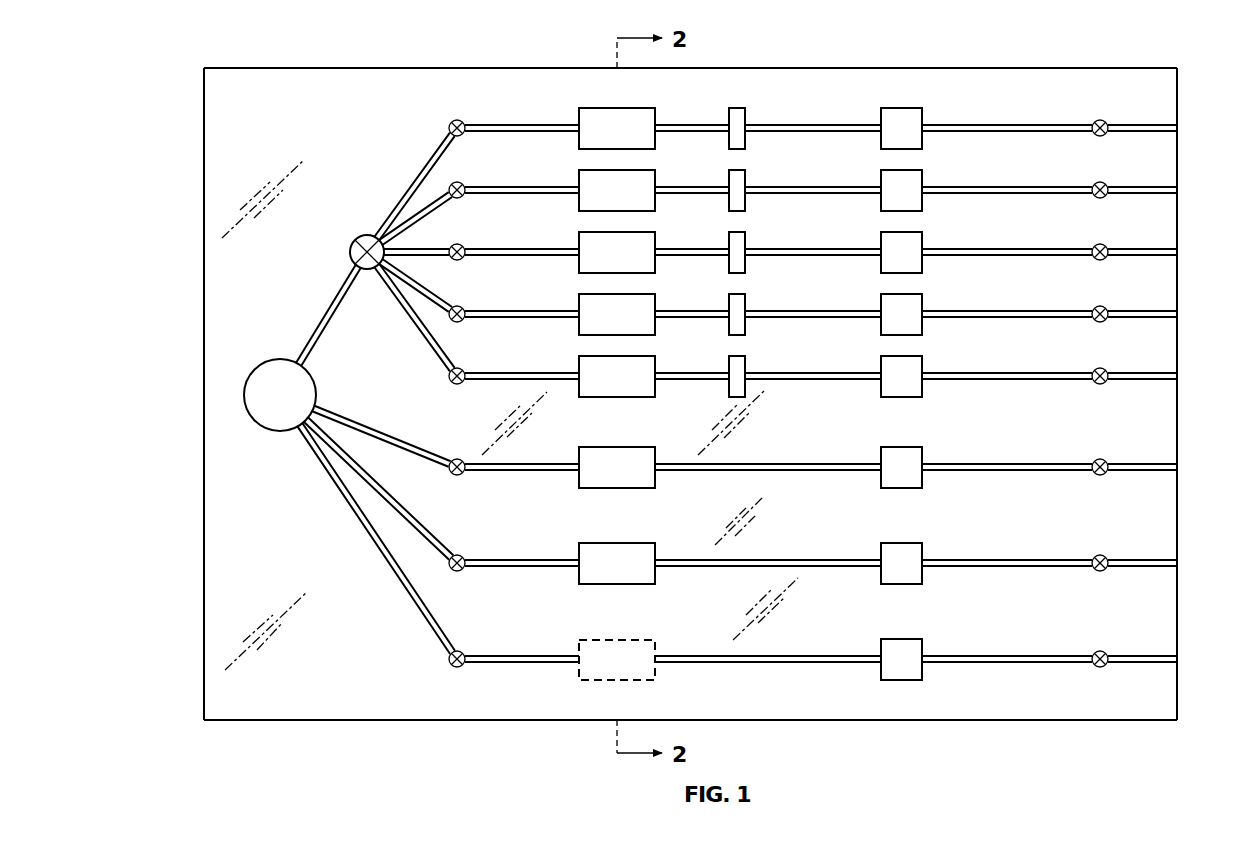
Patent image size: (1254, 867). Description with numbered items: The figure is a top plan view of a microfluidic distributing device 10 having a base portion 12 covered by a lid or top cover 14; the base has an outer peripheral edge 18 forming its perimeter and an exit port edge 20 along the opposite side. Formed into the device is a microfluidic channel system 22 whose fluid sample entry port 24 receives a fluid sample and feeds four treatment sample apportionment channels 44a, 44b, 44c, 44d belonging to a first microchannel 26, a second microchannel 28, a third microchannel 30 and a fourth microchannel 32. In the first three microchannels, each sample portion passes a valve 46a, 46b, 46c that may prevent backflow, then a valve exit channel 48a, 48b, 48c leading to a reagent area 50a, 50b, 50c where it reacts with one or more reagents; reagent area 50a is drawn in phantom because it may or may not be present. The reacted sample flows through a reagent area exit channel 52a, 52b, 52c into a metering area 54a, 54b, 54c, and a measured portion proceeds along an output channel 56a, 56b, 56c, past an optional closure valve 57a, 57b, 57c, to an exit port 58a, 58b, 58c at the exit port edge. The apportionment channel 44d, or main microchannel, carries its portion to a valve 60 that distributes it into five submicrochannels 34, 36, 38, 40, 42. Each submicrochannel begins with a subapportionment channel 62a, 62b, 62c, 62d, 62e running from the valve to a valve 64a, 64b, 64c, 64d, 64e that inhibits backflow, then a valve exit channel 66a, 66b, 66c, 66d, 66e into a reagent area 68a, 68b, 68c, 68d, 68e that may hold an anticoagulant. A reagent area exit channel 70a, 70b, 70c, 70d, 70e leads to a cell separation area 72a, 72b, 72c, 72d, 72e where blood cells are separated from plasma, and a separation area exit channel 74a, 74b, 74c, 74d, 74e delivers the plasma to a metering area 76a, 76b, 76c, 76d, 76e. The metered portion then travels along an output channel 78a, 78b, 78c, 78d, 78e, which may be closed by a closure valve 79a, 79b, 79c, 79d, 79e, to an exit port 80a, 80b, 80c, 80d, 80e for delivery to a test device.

The microfluidic distributing device 10 is at (183, 48).
The base portion 12 is at (248, 68).
The lid or top cover 14 is at (355, 88).
The outer peripheral edge 18 is at (204, 238).
The exit port edge 20 is at (1178, 95).
The microfluidic channel system 22 is at (330, 145).
The fluid sample entry port 24 is at (283, 358).
The first microchannel 26 is at (520, 678).
The second microchannel 28 is at (520, 582).
The third microchannel 30 is at (520, 487).
The fourth microchannel 32 is at (360, 118).
The submicrochannel 34 is at (520, 111).
The submicrochannel 36 is at (520, 173).
The submicrochannel 38 is at (520, 235).
The submicrochannel 40 is at (520, 297).
The submicrochannel 42 is at (520, 359).
The treatment sample apportionment channel 44a is at (368, 528).
The treatment sample apportionment channel 44b is at (353, 468).
The treatment sample apportionment channel 44c is at (337, 415).
The treatment sample apportionment channel 44d is at (330, 305).
The valve 46a is at (456, 668).
The valve 46b is at (457, 572).
The valve 46c is at (455, 476).
The valve exit channel 48a is at (545, 664).
The valve exit channel 48b is at (545, 568).
The valve exit channel 48c is at (545, 472).
The reagent area 50a is at (617, 680).
The reagent area 50b is at (617, 584).
The reagent area 50c is at (617, 488).
The reagent area exit channel 52a is at (819, 655).
The reagent area exit channel 52b is at (819, 559).
The reagent area exit channel 52c is at (819, 463).
The metering area 54a is at (923, 649).
The metering area 54b is at (923, 553).
The metering area 54c is at (923, 457).
The output channel 56a is at (1027, 654).
The output channel 56b is at (1027, 558).
The output channel 56c is at (1027, 462).
The closure valve 57a is at (1103, 652).
The closure valve 57b is at (1103, 556).
The closure valve 57c is at (1103, 460).
The exit port 58a is at (1178, 659).
The exit port 58b is at (1178, 563).
The exit port 58c is at (1178, 467).
The valve 60 is at (350, 243).
The subapportionment channel 62a is at (438, 154).
The subapportionment channel 62b is at (400, 225).
The subapportionment channel 62c is at (397, 260).
The subapportionment channel 62d is at (417, 289).
The subapportionment channel 62e is at (425, 332).
The valve 64a is at (452, 121).
The valve 64b is at (450, 186).
The valve 64c is at (449, 246).
The valve 64d is at (452, 322).
The valve 64e is at (453, 384).
The valve exit channel 66a is at (547, 124).
The valve exit channel 66b is at (547, 186).
The valve exit channel 66c is at (547, 248).
The valve exit channel 66d is at (547, 310).
The valve exit channel 66e is at (547, 372).
The reagent area 68a is at (617, 108).
The reagent area 68b is at (620, 170).
The reagent area 68c is at (620, 232).
The reagent area 68d is at (620, 294).
The reagent area 68e is at (620, 356).
The reagent area exit channel 70a is at (705, 125).
The reagent area exit channel 70b is at (705, 187).
The reagent area exit channel 70c is at (705, 249).
The reagent area exit channel 70d is at (705, 311).
The reagent area exit channel 70e is at (705, 373).
The cell separation area 72a is at (749, 122).
The cell separation area 72b is at (749, 184).
The cell separation area 72c is at (749, 246).
The cell separation area 72d is at (749, 308).
The cell separation area 72e is at (749, 370).
The separation area exit channel 74a is at (817, 124).
The separation area exit channel 74b is at (817, 186).
The separation area exit channel 74c is at (817, 248).
The separation area exit channel 74d is at (817, 310).
The separation area exit channel 74e is at (817, 372).
The metering area 76a is at (925, 123).
The metering area 76b is at (925, 185).
The metering area 76c is at (925, 247).
The metering area 76d is at (925, 309).
The metering area 76e is at (925, 371).
The output channel 78a is at (1027, 123).
The output channel 78b is at (1027, 185).
The output channel 78c is at (1027, 247).
The output channel 78d is at (1027, 309).
The output channel 78e is at (1027, 371).
The closure valve 79a is at (1103, 121).
The closure valve 79b is at (1103, 183).
The closure valve 79c is at (1103, 245).
The closure valve 79d is at (1103, 307).
The closure valve 79e is at (1103, 369).
The exit port 80a is at (1178, 128).
The exit port 80b is at (1178, 190).
The exit port 80c is at (1178, 252).
The exit port 80d is at (1178, 314).
The exit port 80e is at (1178, 376).